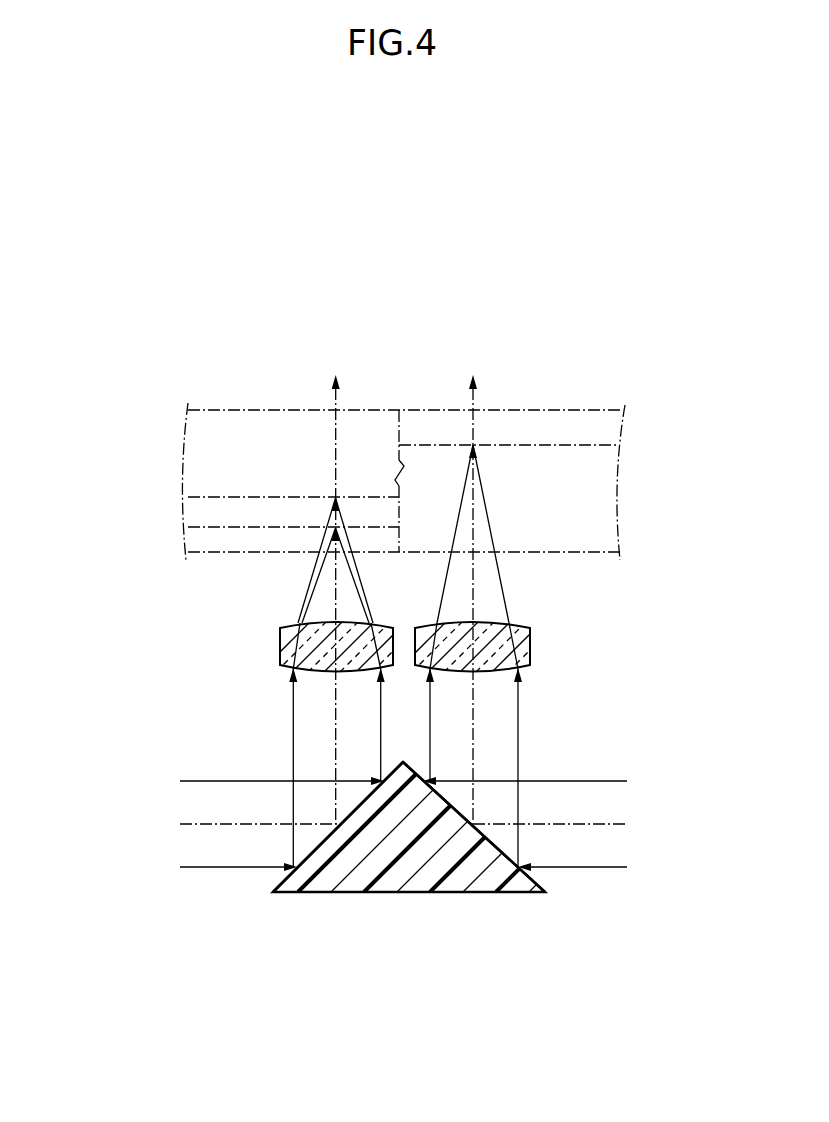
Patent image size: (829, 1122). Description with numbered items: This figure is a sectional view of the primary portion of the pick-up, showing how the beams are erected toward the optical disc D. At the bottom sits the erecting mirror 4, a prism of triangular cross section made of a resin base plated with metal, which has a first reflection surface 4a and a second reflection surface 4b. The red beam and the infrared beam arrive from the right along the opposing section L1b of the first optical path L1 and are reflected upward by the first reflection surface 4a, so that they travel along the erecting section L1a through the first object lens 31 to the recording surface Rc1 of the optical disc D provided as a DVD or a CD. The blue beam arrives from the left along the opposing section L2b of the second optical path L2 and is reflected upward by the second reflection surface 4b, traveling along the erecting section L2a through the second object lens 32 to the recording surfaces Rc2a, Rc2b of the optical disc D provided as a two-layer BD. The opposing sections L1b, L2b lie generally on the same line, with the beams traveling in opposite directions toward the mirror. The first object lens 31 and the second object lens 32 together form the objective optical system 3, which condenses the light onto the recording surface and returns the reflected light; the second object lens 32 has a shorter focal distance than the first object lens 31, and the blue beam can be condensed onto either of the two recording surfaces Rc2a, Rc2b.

The optical disc D is at (582, 410).
The recording surface Rc1 is at (577, 445).
The recording surface Rc2a is at (245, 497).
The recording surface Rc2b is at (230, 527).
The second optical path L2 is at (333, 400).
The first optical path L1 is at (475, 398).
The objective optical system 3 is at (396, 639).
The second object lens 32 is at (282, 633).
The first object lens 31 is at (530, 633).
The erecting section L2a is at (335, 722).
The erecting section L1a is at (478, 722).
The opposing section L2b is at (228, 822).
The opposing section L1b is at (583, 822).
The erecting mirror 4 is at (385, 878).
The second reflection surface 4b is at (310, 855).
The first reflection surface 4a is at (505, 857).